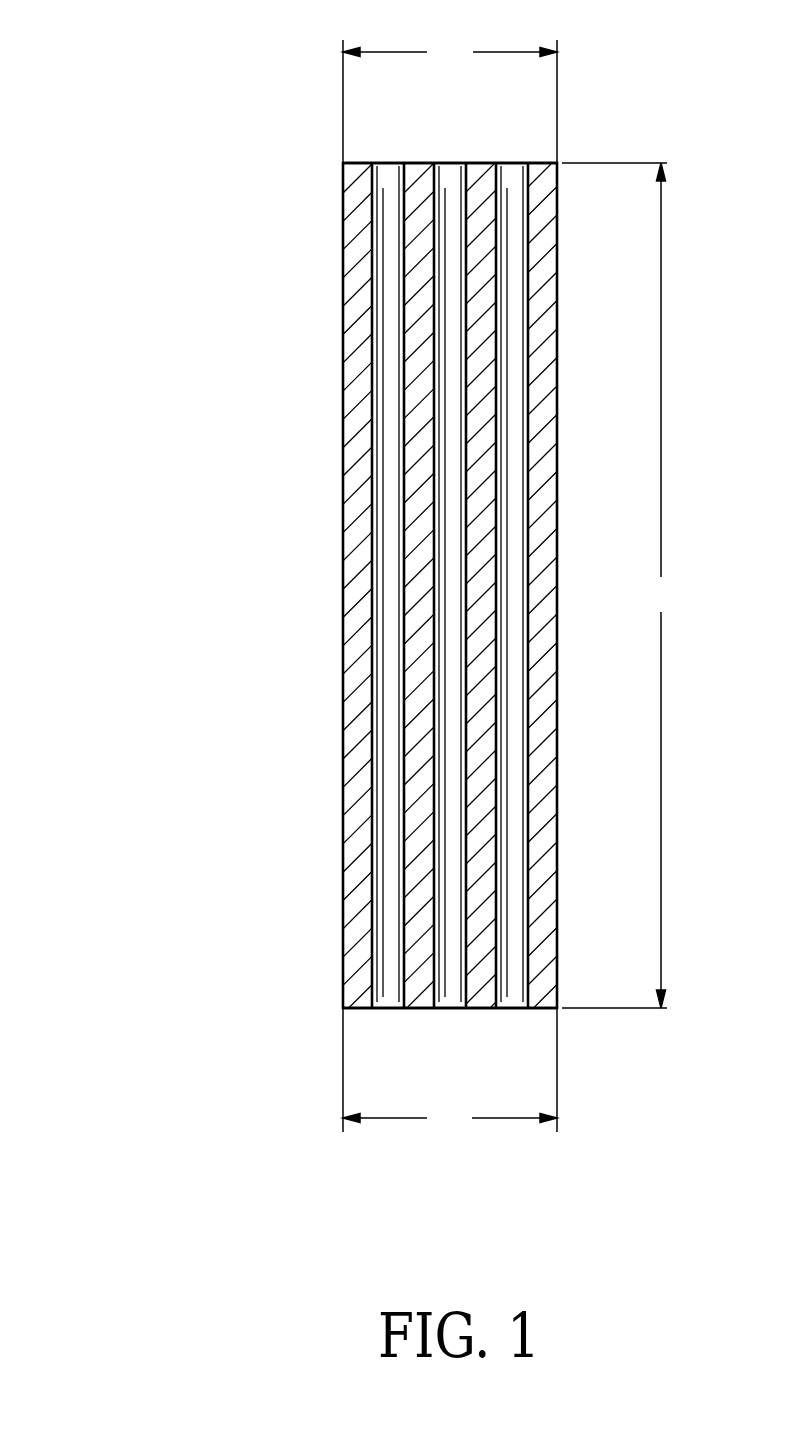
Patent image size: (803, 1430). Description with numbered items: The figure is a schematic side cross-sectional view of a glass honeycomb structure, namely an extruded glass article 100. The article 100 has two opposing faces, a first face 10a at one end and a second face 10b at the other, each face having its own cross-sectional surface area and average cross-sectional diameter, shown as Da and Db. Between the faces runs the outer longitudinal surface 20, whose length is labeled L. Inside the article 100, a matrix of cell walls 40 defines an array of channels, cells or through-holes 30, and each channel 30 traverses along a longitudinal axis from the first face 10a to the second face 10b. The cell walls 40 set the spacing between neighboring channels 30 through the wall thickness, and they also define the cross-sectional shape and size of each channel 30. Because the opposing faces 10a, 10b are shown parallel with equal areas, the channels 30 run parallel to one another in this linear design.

The extruded glass article 100 is at (195, 168).
The outer longitudinal surface 20 is at (343, 328).
The cell walls 40 is at (358, 597).
The channels 30 is at (385, 798).
The first face 10a is at (485, 162).
The second face 10b is at (505, 1008).